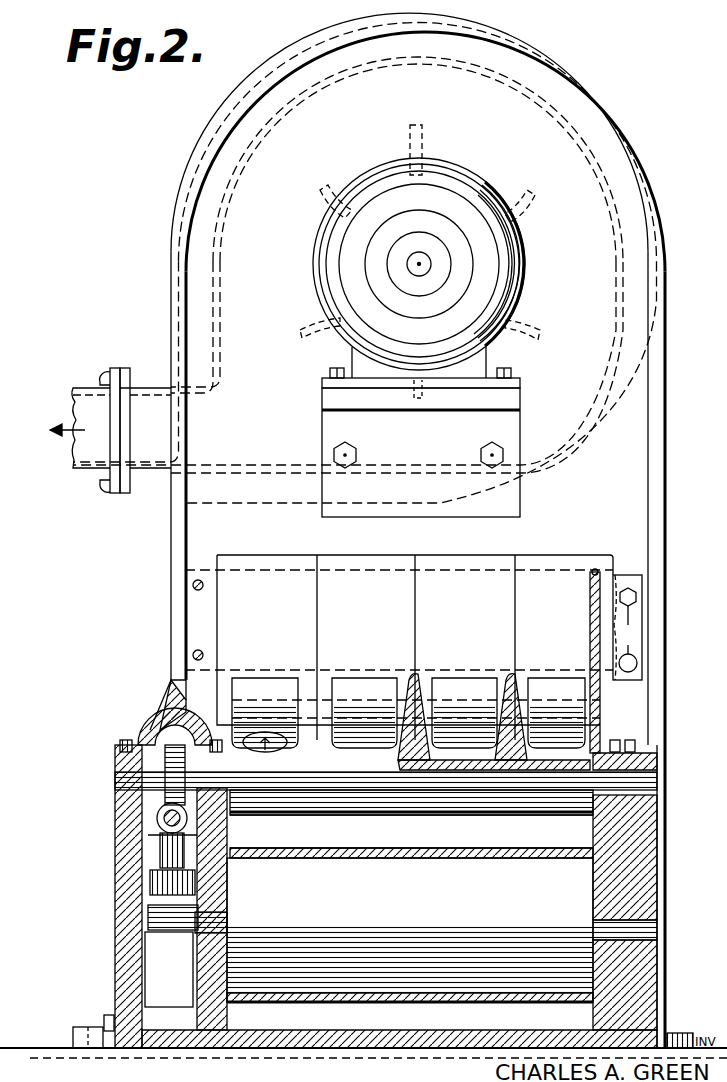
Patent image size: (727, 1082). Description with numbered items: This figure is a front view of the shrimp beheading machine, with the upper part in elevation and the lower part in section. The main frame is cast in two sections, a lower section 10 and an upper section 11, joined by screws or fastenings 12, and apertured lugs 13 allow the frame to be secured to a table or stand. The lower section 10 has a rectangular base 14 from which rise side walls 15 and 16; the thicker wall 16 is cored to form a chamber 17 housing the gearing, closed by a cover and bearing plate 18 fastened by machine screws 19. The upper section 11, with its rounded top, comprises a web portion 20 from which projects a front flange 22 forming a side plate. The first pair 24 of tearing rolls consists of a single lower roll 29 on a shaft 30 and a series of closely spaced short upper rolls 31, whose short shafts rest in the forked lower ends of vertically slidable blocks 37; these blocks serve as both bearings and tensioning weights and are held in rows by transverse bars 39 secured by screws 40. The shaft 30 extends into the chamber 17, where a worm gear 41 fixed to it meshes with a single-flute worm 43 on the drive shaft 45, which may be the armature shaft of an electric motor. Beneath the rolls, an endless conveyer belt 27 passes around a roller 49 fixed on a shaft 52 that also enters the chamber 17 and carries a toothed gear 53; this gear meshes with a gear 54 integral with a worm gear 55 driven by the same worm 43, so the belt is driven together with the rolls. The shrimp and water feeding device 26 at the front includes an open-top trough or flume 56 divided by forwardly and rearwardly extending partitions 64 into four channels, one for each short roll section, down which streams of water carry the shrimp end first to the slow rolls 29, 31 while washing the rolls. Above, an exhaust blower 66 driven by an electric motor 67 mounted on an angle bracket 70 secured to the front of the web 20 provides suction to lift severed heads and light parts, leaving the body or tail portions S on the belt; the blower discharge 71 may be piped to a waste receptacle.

The lower frame section 10 is at (648, 838).
The upper frame section 11 is at (612, 482).
The fastenings 12 is at (128, 738).
The apertured lugs 13 is at (80, 1030).
The rectangular base 14 is at (368, 1042).
The side wall 15 is at (650, 860).
The side wall 16 is at (232, 952).
The chamber 17 is at (180, 993).
The cover and bearing plate 18 is at (130, 942).
The machine screws 19 is at (106, 1018).
The web portion 20 is at (636, 405).
The front flange 22 is at (652, 462).
The first pair of rolls 24 is at (411, 831).
The shrimp and water feeding device 26 is at (595, 568).
The endless conveyer belt 27 is at (355, 858).
The lower roll 29 is at (375, 781).
The shaft 30 is at (150, 772).
The upper rolls 31 is at (295, 688).
The vertically slidable blocks 37 is at (340, 568).
The transverse plates or bars 39 is at (622, 580).
The screws 40 is at (195, 632).
The worm gear 41 is at (178, 742).
The worm 43 is at (165, 820).
The drive shaft 45 is at (160, 798).
The roller 49 is at (405, 899).
The shaft 52 is at (212, 918).
The toothed gear 53 is at (150, 908).
The gear 54 is at (150, 880).
The worm gear 55 is at (200, 835).
The trough 56 is at (544, 766).
The partitions 64 is at (412, 676).
The exhaust fan or blower 66 is at (422, 140).
The electric motor 67 is at (500, 228).
The angle bracket 70 is at (318, 397).
The blower discharge 71 is at (148, 392).
The body or tail portions S is at (285, 750).